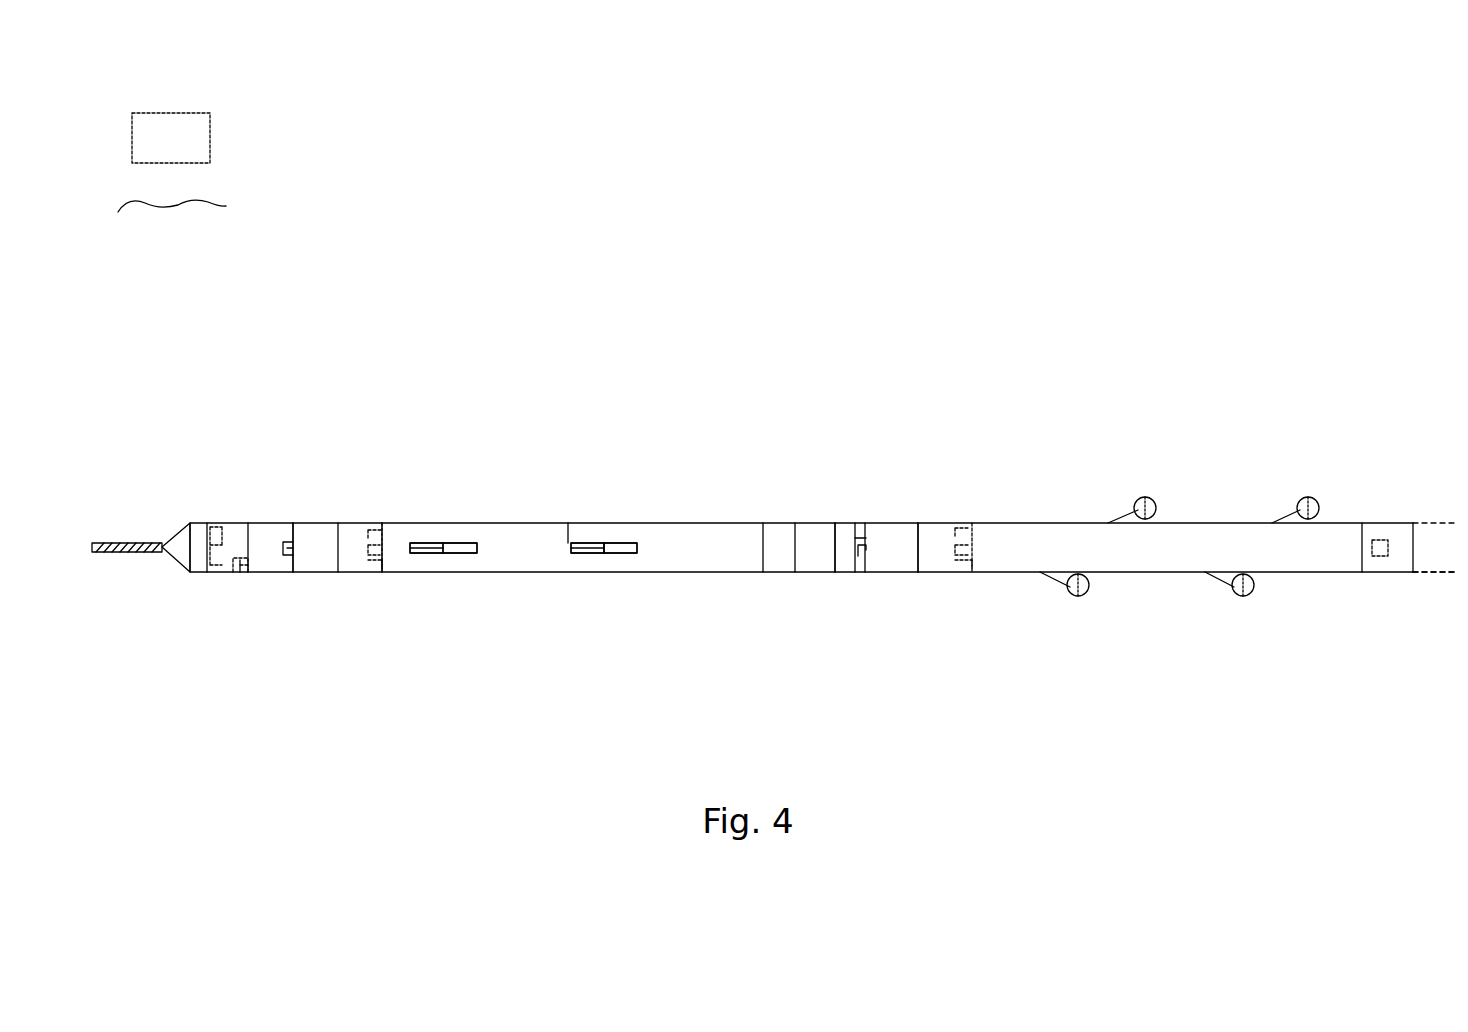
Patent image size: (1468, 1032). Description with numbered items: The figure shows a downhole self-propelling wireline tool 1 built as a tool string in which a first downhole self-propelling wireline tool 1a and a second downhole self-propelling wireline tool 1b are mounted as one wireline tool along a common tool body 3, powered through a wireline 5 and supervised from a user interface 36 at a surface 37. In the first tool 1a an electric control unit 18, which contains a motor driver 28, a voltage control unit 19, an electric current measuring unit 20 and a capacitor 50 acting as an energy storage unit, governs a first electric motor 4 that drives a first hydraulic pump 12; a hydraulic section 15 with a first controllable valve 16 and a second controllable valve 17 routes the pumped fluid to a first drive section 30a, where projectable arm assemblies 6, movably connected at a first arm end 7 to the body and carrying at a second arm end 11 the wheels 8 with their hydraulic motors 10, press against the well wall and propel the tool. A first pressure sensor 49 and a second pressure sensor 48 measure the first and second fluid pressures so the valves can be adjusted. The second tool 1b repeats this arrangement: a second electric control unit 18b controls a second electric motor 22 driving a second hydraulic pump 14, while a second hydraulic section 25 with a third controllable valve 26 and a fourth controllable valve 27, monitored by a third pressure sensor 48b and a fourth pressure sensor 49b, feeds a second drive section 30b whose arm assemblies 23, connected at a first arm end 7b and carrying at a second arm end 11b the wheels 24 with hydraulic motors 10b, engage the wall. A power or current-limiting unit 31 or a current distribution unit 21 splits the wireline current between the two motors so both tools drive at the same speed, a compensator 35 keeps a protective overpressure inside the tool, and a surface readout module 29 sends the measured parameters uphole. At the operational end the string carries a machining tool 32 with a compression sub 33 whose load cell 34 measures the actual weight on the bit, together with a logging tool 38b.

The downhole self-propelling wireline tool 1 is at (1283, 245).
The first downhole self-propelling wireline tool 1a is at (451, 372).
The second downhole self-propelling wireline tool 1b is at (1210, 355).
The tool body 3 is at (690, 523).
The electric motor 4 is at (276, 523).
The wireline 5 is at (134, 552).
The projectable arm assemblies 6 is at (442, 543).
The first arm end 7 is at (570, 523).
The first arm end 7b is at (1108, 523).
The wheels 8 is at (477, 545).
The hydraulic motor 10 is at (490, 543).
The hydraulic motor 10b is at (1150, 505).
The second arm end 11 is at (614, 545).
The second arm end 11b is at (1128, 523).
The first hydraulic pump 12 is at (326, 523).
The second hydraulic pump 14 is at (895, 572).
The hydraulic section 15 is at (374, 523).
The first controllable valve 16 is at (381, 523).
The second controllable valve 17 is at (378, 572).
The electric control unit 18 is at (242, 523).
The second electric control unit 18b is at (776, 523).
The voltage control unit 19 is at (208, 522).
The electric current measuring unit 20 is at (228, 574).
The current distribution unit 21 is at (216, 524).
The second electric motor 22 is at (845, 523).
The projectable arm assemblies 23 is at (1108, 520).
The wheels 24 is at (1143, 497).
The second hydraulic section 25 is at (935, 523).
The third controllable valve 26 is at (963, 523).
The fourth controllable valve 27 is at (957, 572).
The motor driver 28 is at (296, 572).
The surface readout module 29 is at (195, 572).
The first drive section 30a is at (702, 572).
The second drive section 30b is at (1310, 572).
The power or current-limiting unit 31 is at (296, 523).
The machining tool 32 is at (1430, 523).
The compression sub 33 is at (1380, 557).
The load cell 34 is at (1386, 523).
The compensator 35 is at (820, 572).
The user interface 36 is at (171, 138).
The surface 37 is at (220, 205).
The logging tool 38b is at (1433, 573).
The second pressure sensor 48 is at (381, 527).
The third pressure sensor 48b is at (970, 523).
The first pressure sensor 49 is at (382, 574).
The fourth pressure sensor 49b is at (970, 572).
The capacitor 50 is at (242, 572).